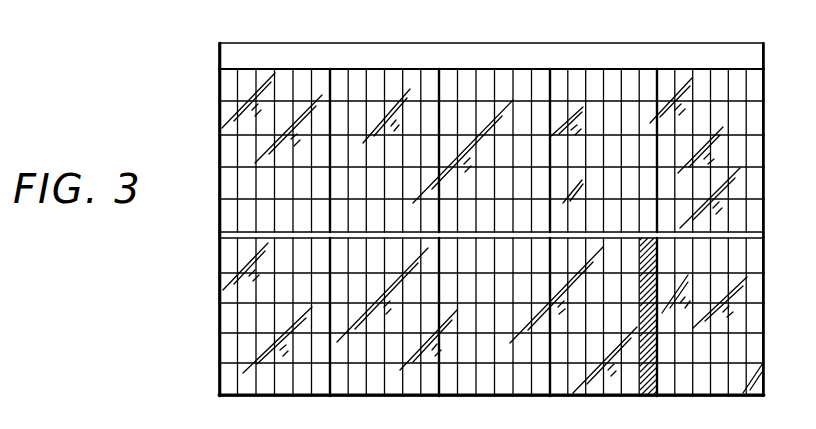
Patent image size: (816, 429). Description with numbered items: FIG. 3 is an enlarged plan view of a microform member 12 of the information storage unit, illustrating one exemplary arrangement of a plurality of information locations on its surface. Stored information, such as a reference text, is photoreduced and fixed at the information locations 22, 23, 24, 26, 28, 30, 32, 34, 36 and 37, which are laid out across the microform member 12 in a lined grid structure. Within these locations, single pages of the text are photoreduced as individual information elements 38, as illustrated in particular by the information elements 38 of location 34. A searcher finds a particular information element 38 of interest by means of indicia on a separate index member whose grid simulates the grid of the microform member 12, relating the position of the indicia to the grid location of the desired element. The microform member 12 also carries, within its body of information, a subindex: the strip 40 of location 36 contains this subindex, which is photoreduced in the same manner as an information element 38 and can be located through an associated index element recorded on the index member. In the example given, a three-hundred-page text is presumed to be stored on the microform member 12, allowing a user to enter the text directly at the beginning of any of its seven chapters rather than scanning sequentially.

The microform member 12 is at (225, 258).
The information location 22 is at (246, 80).
The information location 23 is at (372, 87).
The information location 24 is at (502, 92).
The information location 26 is at (590, 87).
The information location 28 is at (717, 82).
The information location 30 is at (228, 290).
The information location 32 is at (382, 385).
The information location 34 is at (510, 385).
The information location 36 is at (606, 387).
The information location 37 is at (722, 387).
The information element 38 is at (465, 355).
The strip 40 is at (655, 388).